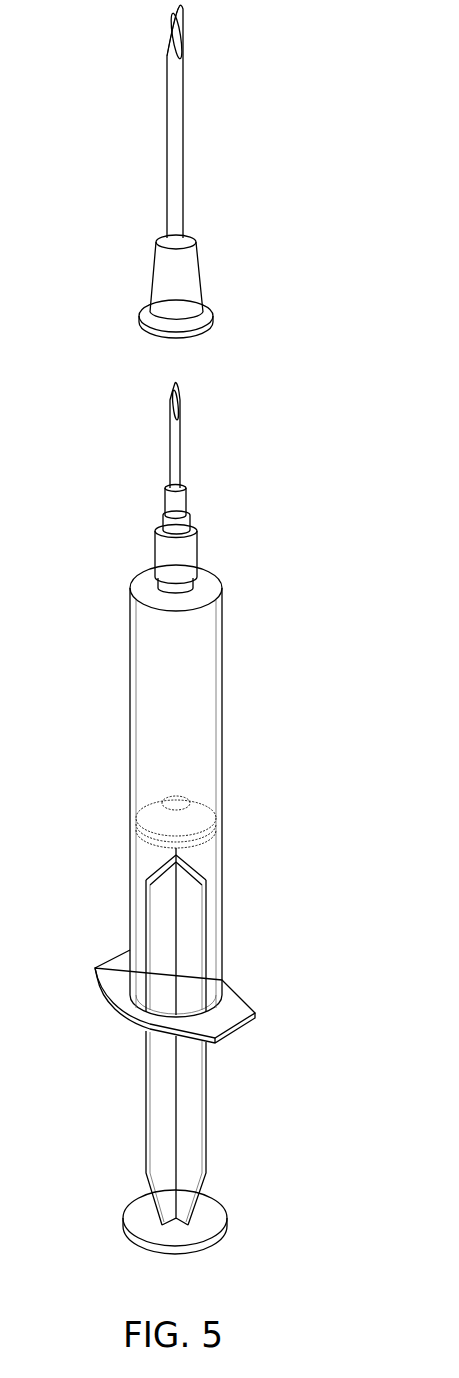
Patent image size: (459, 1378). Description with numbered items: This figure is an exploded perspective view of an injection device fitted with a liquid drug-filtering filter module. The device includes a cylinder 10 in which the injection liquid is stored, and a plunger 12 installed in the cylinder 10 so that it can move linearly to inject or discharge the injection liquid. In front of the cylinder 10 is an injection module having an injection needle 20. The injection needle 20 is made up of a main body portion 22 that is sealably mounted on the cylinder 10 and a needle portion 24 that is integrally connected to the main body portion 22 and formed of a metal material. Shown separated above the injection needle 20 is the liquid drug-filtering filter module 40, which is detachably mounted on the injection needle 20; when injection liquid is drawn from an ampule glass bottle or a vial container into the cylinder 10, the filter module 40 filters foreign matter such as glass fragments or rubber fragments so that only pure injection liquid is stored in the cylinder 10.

The cylinder 10 is at (131, 761).
The plunger 12 is at (148, 1106).
The injection needle 20 is at (107, 487).
The main body portion 22 is at (137, 539).
The needle portion 24 is at (170, 453).
The liquid drug-filtering filter module 40 is at (123, 265).